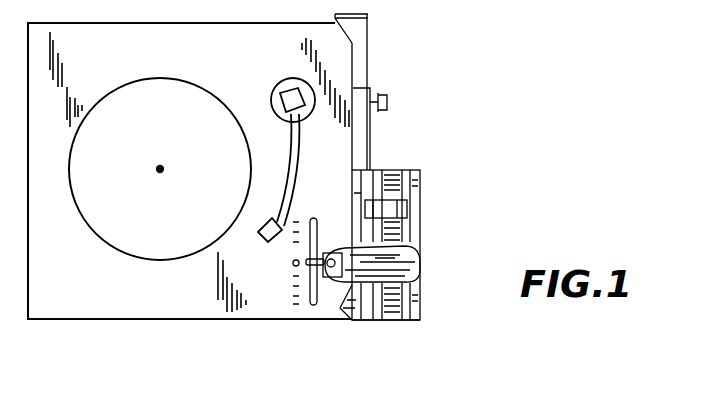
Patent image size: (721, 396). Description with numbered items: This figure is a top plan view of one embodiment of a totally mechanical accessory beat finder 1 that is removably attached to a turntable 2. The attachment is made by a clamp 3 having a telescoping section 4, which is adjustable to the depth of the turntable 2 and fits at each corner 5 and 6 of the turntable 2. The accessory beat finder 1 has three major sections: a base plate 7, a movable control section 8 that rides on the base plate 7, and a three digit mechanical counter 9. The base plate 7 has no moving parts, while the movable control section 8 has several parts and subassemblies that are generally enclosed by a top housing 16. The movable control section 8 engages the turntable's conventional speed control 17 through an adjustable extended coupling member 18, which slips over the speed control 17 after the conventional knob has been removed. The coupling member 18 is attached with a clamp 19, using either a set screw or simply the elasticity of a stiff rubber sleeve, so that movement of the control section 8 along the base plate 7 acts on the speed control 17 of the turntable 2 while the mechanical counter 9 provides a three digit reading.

The accessory beat finder 1 is at (397, 341).
The turntable 2 is at (97, 326).
The clamp 3 is at (362, 63).
The telescoping section 4 is at (401, 147).
The corner 5 is at (368, 15).
The corner 6 is at (344, 320).
The base plate 7 is at (411, 170).
The movable control section 8 is at (431, 250).
The three digit mechanical counter 9 is at (430, 187).
The top housing 16 is at (421, 320).
The speed control 17 is at (266, 276).
The adjustable extended coupling member 18 is at (325, 250).
The clamp 19 is at (322, 280).